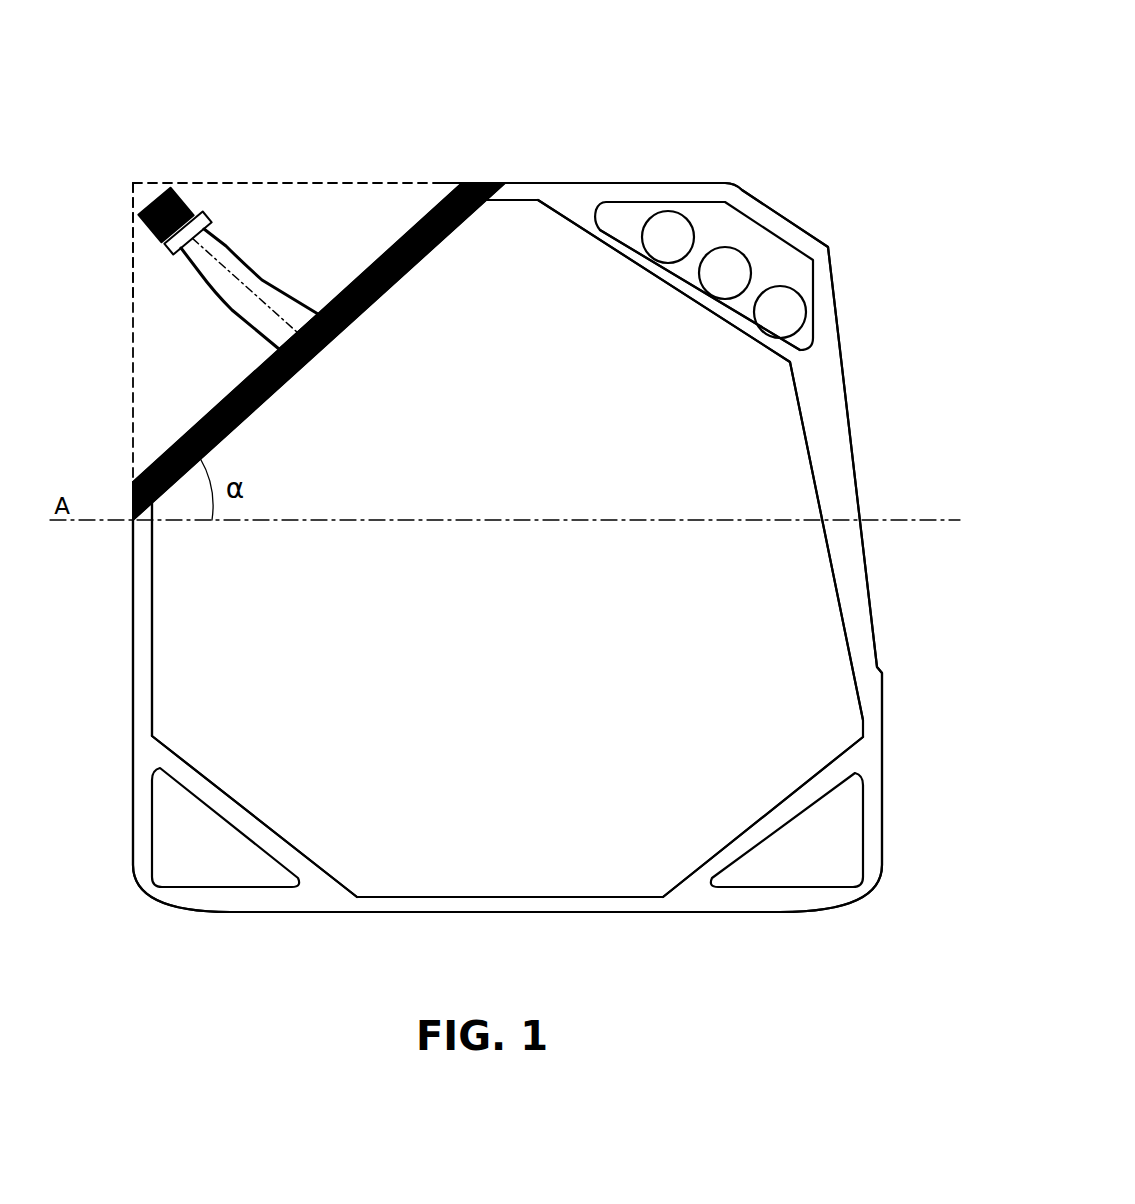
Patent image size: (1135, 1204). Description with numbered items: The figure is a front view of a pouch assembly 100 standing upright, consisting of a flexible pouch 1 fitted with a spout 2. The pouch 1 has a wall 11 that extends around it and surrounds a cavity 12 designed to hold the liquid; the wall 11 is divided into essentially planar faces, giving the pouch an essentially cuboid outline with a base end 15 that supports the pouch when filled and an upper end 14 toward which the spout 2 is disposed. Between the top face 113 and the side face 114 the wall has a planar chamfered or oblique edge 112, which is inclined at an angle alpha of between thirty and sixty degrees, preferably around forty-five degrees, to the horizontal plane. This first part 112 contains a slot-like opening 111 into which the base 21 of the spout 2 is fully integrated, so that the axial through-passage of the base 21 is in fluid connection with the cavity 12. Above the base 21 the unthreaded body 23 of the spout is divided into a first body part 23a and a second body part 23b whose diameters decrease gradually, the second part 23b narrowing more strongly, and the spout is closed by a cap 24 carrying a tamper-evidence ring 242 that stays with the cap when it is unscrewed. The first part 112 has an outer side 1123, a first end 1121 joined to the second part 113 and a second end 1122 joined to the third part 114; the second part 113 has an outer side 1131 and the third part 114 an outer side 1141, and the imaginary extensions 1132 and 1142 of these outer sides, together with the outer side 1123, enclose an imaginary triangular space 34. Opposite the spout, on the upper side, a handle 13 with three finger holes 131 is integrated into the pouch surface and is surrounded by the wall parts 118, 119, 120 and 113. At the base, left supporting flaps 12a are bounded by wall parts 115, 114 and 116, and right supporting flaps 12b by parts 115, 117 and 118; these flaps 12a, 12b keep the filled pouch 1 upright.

The pouch assembly 100 is at (704, 117).
The flexible pouch 1 is at (170, 663).
The wall 11 is at (835, 465).
The cavity 12 is at (507, 548).
The left supporting flaps 12a is at (227, 828).
The right supporting flaps 12b is at (768, 848).
The handle 13 is at (768, 252).
The holes 131 is at (772, 316).
The upper end 14 is at (513, 183).
The base end 15 is at (505, 915).
The opening 111 is at (280, 380).
The chamfered or oblique edge 112 is at (382, 282).
The top face 113 is at (523, 193).
The side face 114 is at (147, 615).
The wall part 115 is at (463, 907).
The wall part 116 is at (277, 837).
The wall part 117 is at (810, 783).
The wall part 118 is at (832, 497).
The wall part 119 is at (628, 245).
The wall part 120 is at (737, 200).
The first end 1121 is at (465, 183).
The second end 1122 is at (133, 482).
The outer side 1123 is at (358, 285).
The outer side 1131 is at (640, 183).
The imaginary extension 1132 is at (297, 183).
The outer side 1141 is at (133, 734).
The imaginary extension 1142 is at (133, 343).
The spout 2 is at (256, 259).
The base 21 is at (336, 333).
The body 23 is at (232, 315).
The first body part 23a is at (212, 267).
The second body part 23b is at (258, 303).
The cap 24 is at (188, 217).
The tamper-evidence ring 242 is at (203, 221).
The imaginary triangular space 34 is at (150, 262).